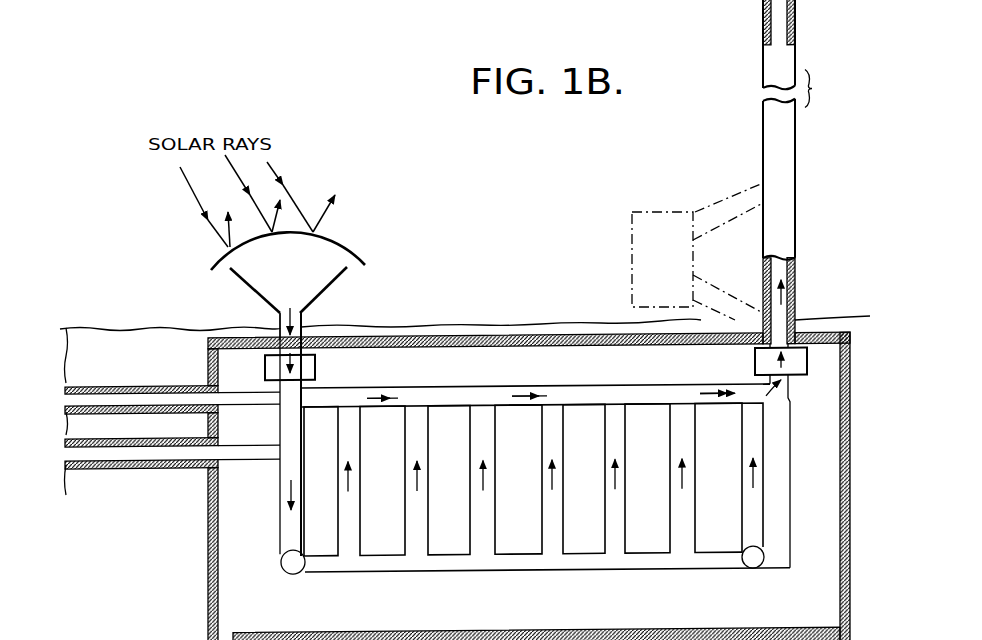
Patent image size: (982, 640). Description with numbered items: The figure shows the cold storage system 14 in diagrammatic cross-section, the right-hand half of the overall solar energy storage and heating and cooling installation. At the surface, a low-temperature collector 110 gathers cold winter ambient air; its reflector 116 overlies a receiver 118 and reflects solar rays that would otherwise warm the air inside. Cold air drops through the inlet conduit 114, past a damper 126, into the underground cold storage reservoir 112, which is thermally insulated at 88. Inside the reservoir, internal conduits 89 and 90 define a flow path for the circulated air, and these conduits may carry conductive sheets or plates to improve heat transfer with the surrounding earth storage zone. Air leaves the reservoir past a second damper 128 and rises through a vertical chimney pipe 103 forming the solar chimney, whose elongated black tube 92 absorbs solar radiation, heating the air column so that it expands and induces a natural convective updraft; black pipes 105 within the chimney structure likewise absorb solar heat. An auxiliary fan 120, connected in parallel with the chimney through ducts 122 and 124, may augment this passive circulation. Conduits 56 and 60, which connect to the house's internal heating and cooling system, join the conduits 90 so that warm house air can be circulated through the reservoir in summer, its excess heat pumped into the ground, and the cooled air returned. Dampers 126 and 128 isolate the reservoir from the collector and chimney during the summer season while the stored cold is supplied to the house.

The cold storage system 14 is at (397, 172).
The conduit 56 is at (120, 357).
The conduit 60 is at (123, 467).
The insulating layer 88 is at (222, 580).
The internal conduit 89 is at (512, 562).
The internal conduit 90 is at (410, 451).
The black tube 92 is at (797, 6).
The vertical exhaust pipe 103 is at (797, 22).
The black pipe 105 is at (767, 20).
The low-temperature collector 110 is at (343, 240).
The cold storage reservoir 112 is at (494, 381).
The inlet conduit 114 is at (301, 320).
The reflector 116 is at (220, 256).
The receiver 118 is at (240, 283).
The fan 120 is at (630, 232).
The duct 122 is at (733, 295).
The duct 124 is at (716, 203).
The damper 126 is at (305, 369).
The damper 128 is at (778, 368).